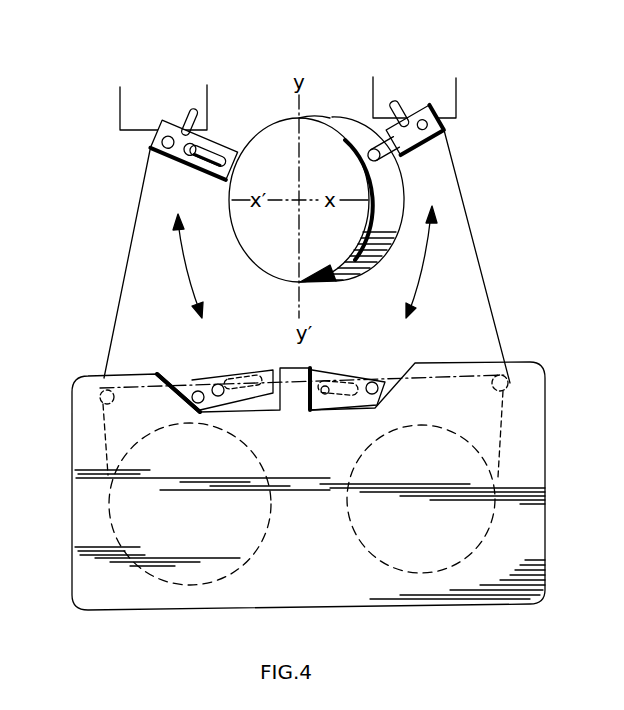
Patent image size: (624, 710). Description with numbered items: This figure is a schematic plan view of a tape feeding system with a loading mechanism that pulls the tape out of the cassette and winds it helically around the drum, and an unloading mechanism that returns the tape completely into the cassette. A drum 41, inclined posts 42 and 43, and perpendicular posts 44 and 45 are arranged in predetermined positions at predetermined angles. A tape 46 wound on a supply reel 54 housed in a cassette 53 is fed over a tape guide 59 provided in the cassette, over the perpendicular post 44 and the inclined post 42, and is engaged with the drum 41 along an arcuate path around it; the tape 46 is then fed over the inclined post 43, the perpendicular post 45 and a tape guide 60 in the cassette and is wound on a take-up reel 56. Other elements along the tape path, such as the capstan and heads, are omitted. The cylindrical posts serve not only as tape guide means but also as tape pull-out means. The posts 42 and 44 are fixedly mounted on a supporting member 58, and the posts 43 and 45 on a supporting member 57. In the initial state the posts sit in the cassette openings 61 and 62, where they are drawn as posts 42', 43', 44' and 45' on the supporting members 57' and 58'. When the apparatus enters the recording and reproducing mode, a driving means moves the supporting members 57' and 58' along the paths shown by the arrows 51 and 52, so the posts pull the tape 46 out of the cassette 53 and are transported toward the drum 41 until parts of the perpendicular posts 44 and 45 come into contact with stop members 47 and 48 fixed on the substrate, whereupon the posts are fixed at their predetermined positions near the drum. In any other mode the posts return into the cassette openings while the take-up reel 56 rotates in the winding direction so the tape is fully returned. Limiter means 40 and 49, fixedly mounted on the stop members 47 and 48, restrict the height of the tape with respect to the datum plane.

The limiter means 40 is at (184, 120).
The drum 41 is at (268, 253).
The inclined post 42 is at (216, 129).
The inclined post 43 is at (433, 156).
The perpendicular post 44 is at (168, 157).
The perpendicular post 45 is at (426, 91).
The tape 46 is at (127, 268).
The stop member 47 is at (450, 92).
The stop member 48 is at (195, 88).
The limiter means 49 is at (397, 107).
The arrow 51 is at (425, 267).
The arrow 52 is at (192, 288).
The cassette 53 is at (100, 597).
The supply reel 54 is at (245, 540).
The take-up reel 56 is at (388, 542).
The supporting member 57 is at (462, 122).
The supporting member 58 is at (120, 149).
The tape guide 59 is at (102, 400).
The tape guide 60 is at (512, 381).
The cassette opening 61 is at (253, 405).
The cassette opening 62 is at (360, 398).
The slot (lowered position) 42' is at (241, 359).
The shaft (lowered position) 43' is at (311, 419).
The arm edge (lowered position) 44' is at (182, 422).
The block (lowered position) 45' is at (382, 362).
The supporting member 57' is at (338, 358).
The supporting member 58' is at (186, 369).